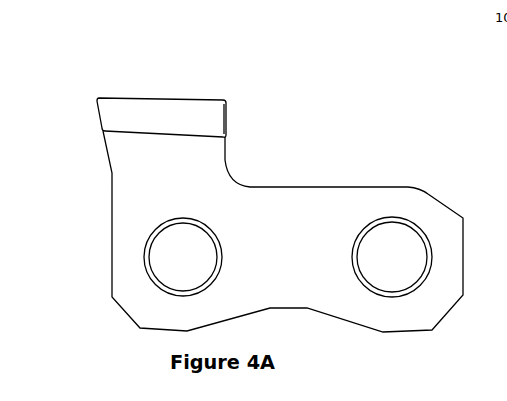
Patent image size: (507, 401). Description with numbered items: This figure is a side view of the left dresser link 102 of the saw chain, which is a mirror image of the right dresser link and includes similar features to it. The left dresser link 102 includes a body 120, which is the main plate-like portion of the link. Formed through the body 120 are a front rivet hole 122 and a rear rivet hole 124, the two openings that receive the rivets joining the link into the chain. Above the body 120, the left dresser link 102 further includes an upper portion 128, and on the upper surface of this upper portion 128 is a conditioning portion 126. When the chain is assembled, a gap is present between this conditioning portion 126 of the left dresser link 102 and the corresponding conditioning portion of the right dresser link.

The left dresser link 102 is at (70, 79).
The body 120 is at (283, 247).
The front rivet hole 122 is at (422, 225).
The rear rivet hole 124 is at (130, 244).
The conditioning portion 126 is at (188, 88).
The upper portion 128 is at (254, 113).